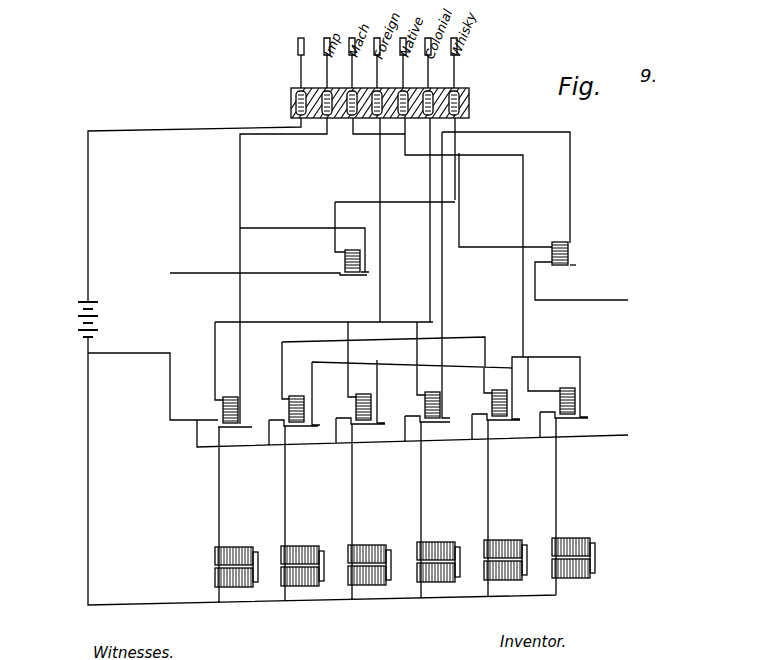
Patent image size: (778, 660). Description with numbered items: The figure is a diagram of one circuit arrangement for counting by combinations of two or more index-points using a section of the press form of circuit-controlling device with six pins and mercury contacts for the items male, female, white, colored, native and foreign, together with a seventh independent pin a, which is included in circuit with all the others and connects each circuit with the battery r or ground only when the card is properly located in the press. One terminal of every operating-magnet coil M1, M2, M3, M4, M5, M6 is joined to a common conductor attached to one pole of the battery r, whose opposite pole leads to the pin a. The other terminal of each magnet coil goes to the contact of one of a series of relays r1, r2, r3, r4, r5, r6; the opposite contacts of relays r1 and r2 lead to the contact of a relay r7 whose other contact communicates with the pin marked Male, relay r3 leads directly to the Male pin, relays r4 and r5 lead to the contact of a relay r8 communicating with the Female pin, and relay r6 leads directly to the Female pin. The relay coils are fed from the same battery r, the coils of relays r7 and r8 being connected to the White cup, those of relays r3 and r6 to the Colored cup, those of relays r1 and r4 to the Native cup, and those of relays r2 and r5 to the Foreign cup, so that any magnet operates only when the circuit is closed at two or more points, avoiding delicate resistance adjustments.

The pin a is at (297, 46).
The battery r is at (96, 319).
The relay r1 is at (567, 391).
The relay r2 is at (499, 393).
The relay r3 is at (432, 395).
The relay r4 is at (230, 400).
The relay r5 is at (296, 399).
The relay r6 is at (363, 397).
The relay r7 is at (570, 253).
The relay r8 is at (352, 251).
The operating-magnet M1 is at (573, 548).
The operating-magnet M2 is at (369, 556).
The operating-magnet M3 is at (505, 550).
The operating-magnet M4 is at (302, 557).
The operating-magnet M5 is at (438, 552).
The operating-magnet M6 is at (236, 558).